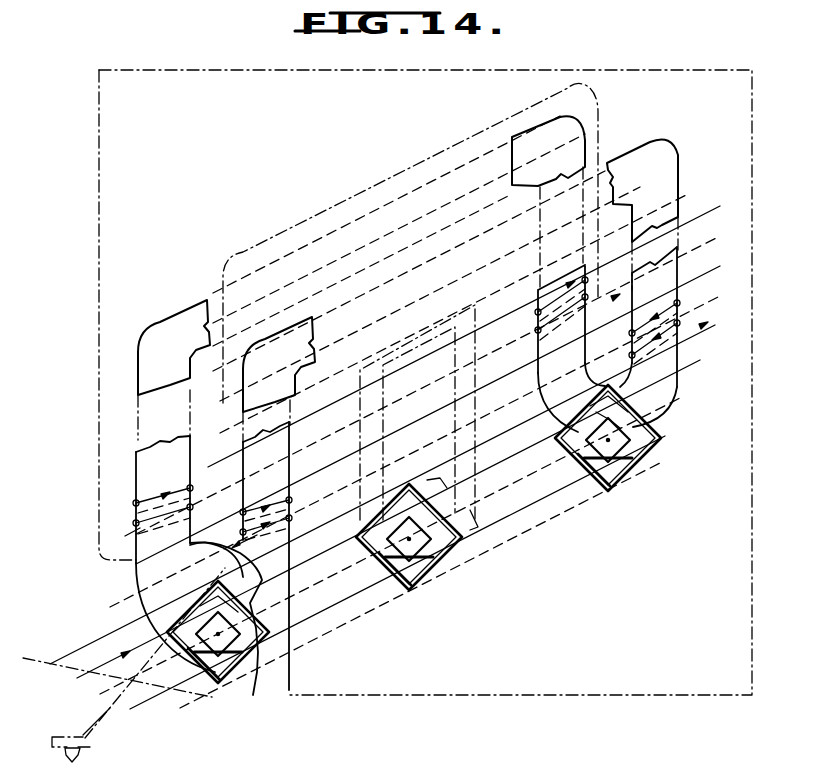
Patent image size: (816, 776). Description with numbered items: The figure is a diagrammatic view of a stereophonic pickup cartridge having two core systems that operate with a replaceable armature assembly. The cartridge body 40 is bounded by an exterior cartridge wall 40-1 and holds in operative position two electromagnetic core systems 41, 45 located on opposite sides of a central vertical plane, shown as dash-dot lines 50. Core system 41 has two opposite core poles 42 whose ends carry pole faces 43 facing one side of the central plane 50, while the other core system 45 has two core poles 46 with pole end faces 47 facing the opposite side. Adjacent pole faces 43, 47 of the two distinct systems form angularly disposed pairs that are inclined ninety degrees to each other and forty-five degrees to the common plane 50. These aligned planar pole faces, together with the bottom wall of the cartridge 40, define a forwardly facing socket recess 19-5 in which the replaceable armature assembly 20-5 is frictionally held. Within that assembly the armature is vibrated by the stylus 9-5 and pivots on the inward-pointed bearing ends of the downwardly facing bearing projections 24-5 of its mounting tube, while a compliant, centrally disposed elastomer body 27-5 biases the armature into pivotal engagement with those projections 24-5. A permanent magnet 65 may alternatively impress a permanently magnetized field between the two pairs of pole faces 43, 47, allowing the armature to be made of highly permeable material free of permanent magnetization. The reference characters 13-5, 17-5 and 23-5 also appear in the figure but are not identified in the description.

The exterior cartridge wall 40-1 is at (677, 69).
The cartridge body 40 is at (600, 118).
The central vertical plane 50 is at (327, 193).
The core system 41 is at (187, 306).
The core system 45 is at (680, 178).
The permanent magnet 65 is at (477, 362).
The core poles 42 is at (140, 466).
The wire conductor 13-5 is at (150, 490).
The wire conductor 17-5 is at (252, 502).
The core poles 46 is at (665, 280).
The pole faces 43 is at (220, 590).
The bearing projections 24-5 is at (205, 603).
The pole end faces 47 is at (262, 650).
The replaceable armature assembly 20-5 is at (108, 633).
The socket space recess 19-5 is at (38, 698).
The wire conductor 23-5 is at (122, 726).
The elastomer body 27-5 is at (420, 592).
The stylus 9-5 is at (80, 752).